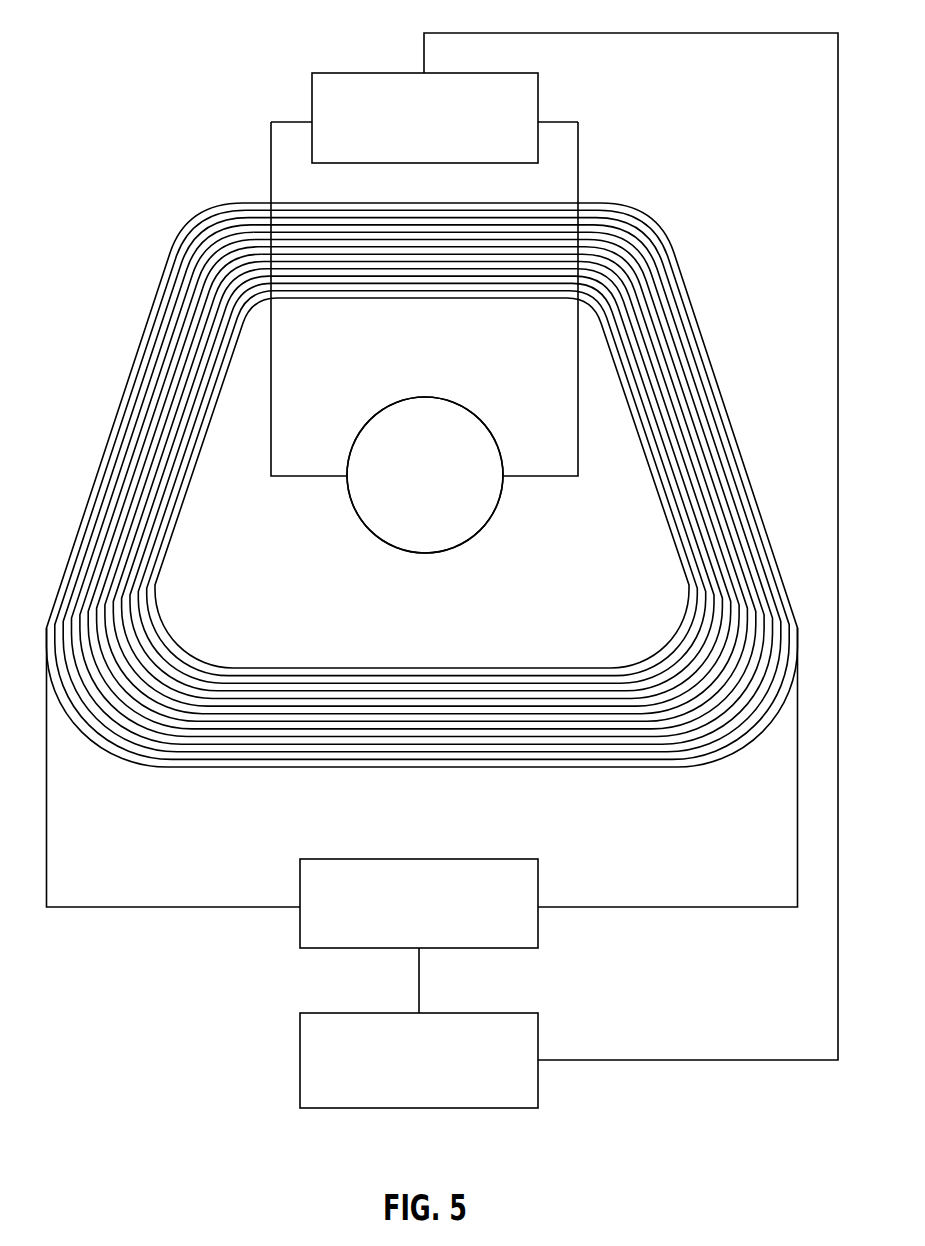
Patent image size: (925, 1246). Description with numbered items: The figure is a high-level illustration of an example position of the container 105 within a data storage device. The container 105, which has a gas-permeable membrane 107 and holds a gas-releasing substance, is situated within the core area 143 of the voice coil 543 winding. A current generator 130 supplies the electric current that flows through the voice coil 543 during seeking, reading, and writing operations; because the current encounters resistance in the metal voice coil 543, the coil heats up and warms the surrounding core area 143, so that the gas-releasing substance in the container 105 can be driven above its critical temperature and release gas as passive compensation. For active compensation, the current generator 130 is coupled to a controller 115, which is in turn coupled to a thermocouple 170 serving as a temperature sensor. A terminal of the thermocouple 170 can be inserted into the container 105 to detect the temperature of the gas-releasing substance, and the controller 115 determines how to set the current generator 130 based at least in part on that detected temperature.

The voice coil 543 is at (120, 405).
The core area 143 is at (292, 594).
The container 105 is at (501, 491).
The gas-permeable membrane 107 is at (447, 487).
The thermocouple 170 is at (312, 105).
The current generator 130 is at (300, 883).
The controller 115 is at (300, 1043).